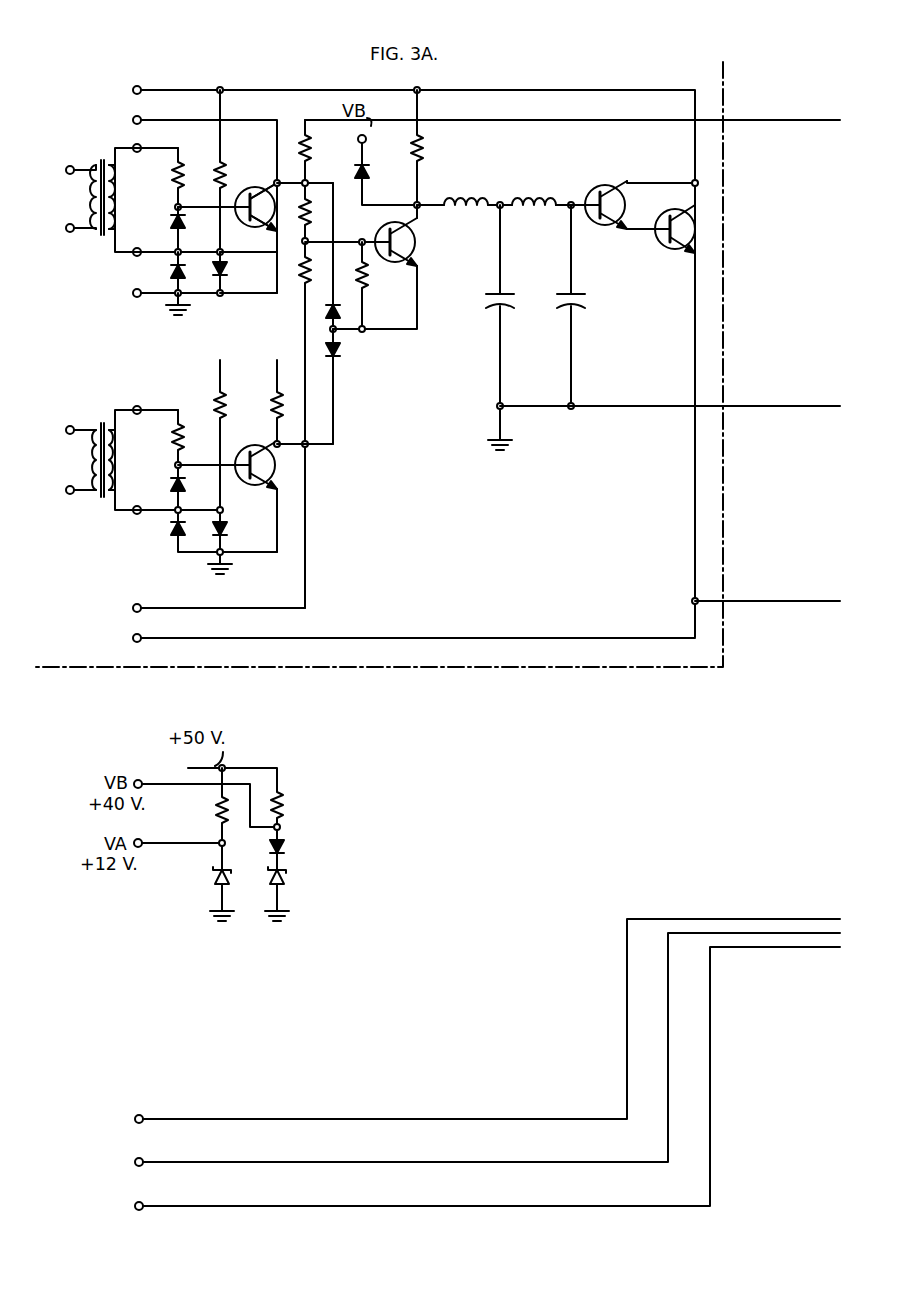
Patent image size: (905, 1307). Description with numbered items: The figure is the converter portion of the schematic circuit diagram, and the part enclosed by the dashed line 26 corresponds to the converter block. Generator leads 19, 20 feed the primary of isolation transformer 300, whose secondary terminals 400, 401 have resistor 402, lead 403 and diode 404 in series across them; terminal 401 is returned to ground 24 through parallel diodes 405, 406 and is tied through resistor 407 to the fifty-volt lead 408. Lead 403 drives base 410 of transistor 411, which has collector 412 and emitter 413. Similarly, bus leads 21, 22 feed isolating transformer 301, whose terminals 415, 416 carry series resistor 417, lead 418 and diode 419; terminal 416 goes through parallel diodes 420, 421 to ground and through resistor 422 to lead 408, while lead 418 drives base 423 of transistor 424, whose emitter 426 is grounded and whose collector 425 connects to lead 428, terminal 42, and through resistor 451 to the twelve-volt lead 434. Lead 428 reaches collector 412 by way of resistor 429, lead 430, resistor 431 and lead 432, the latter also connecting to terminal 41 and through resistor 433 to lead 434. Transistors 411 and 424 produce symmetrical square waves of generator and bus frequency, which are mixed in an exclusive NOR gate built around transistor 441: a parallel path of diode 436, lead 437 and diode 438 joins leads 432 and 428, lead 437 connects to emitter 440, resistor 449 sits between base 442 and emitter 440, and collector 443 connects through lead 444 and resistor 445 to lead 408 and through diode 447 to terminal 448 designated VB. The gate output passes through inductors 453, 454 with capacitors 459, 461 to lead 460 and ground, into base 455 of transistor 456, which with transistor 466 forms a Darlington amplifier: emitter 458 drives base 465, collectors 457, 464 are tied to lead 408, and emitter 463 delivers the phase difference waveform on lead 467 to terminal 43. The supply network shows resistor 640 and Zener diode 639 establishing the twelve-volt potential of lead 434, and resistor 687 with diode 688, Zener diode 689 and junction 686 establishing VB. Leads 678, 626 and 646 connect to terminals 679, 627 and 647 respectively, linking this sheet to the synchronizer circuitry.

The +50 volt lead 408 is at (148, 90).
The terminal 41 is at (133, 122).
The +12 volt lead 434 is at (585, 120).
The terminal 42 is at (202, 608).
The terminal 43 is at (397, 638).
The converter circuit block 26 is at (725, 78).
The isolation transformer 300 is at (106, 159).
The lead 19 is at (68, 168).
The lead 20 is at (71, 239).
The terminal 400 is at (154, 169).
The lead 403 is at (170, 199).
The diode 404 is at (170, 221).
The terminal 401 is at (168, 250).
The diode 405 is at (170, 271).
The resistor 402 is at (210, 162).
The resistor 407 is at (230, 162).
The base 410 is at (248, 188).
The collector 412 is at (247, 167).
The transistor 411 is at (268, 232).
The emitter 413 is at (246, 252).
The diode 406 is at (228, 272).
The ground 24 is at (184, 315).
The lead 430 is at (274, 293).
The resistor 433 is at (316, 137).
The resistor 431 is at (310, 200).
The resistor 429 is at (299, 284).
The lead 432 is at (333, 210).
The diode 436 is at (326, 316).
The diode 438 is at (341, 350).
The terminal VB 448 is at (138, 784).
The diode 447 is at (372, 176).
The resistor 445 is at (424, 142).
The lead 444 is at (422, 200).
The emitter 440 is at (412, 255).
The collector 443 is at (414, 226).
The transistor 441 is at (456, 252).
The base 442 is at (368, 274).
The resistor 449 is at (366, 290).
The lead 437 is at (400, 330).
The inductor 453 is at (452, 195).
The inductor 454 is at (550, 192).
The capacitor 459 is at (486, 300).
The capacitor 461 is at (585, 302).
The lead 460 is at (564, 392).
The transistor 456 is at (653, 177).
The base 455 is at (591, 190).
The collector 457 is at (622, 198).
The emitter 458 is at (616, 228).
The transistor 466 is at (678, 295).
The collector 464 is at (690, 215).
The emitter 463 is at (695, 235).
The base 465 is at (672, 250).
The lead 467 is at (692, 564).
The isolating transformer 301 is at (108, 416).
The bus lead 21 is at (70, 428).
The bus lead 22 is at (70, 502).
The terminal 415 is at (146, 404).
The terminal 416 is at (140, 516).
The resistor 417 is at (170, 436).
The lead 418 is at (174, 462).
The diode 419 is at (171, 486).
The diode 420 is at (170, 532).
The resistor 422 is at (218, 376).
The diode 421 is at (227, 528).
The resistor 451 is at (276, 376).
The transistor 424 is at (258, 500).
The collector 425 is at (270, 428).
The base 423 is at (234, 453).
The emitter 426 is at (268, 480).
The lead 428 is at (338, 562).
The resistor 640 is at (216, 814).
The Zener diode 639 is at (215, 882).
The resistor 687 is at (283, 796).
The junction 686 is at (283, 826).
The diode 688 is at (284, 846).
The Zener diode 689 is at (286, 880).
The terminal 679 is at (135, 1119).
The lead 678 is at (534, 1111).
The terminal 627 is at (135, 1162).
The lead 626 is at (538, 1154).
The terminal 647 is at (135, 1206).
The lead 646 is at (544, 1198).